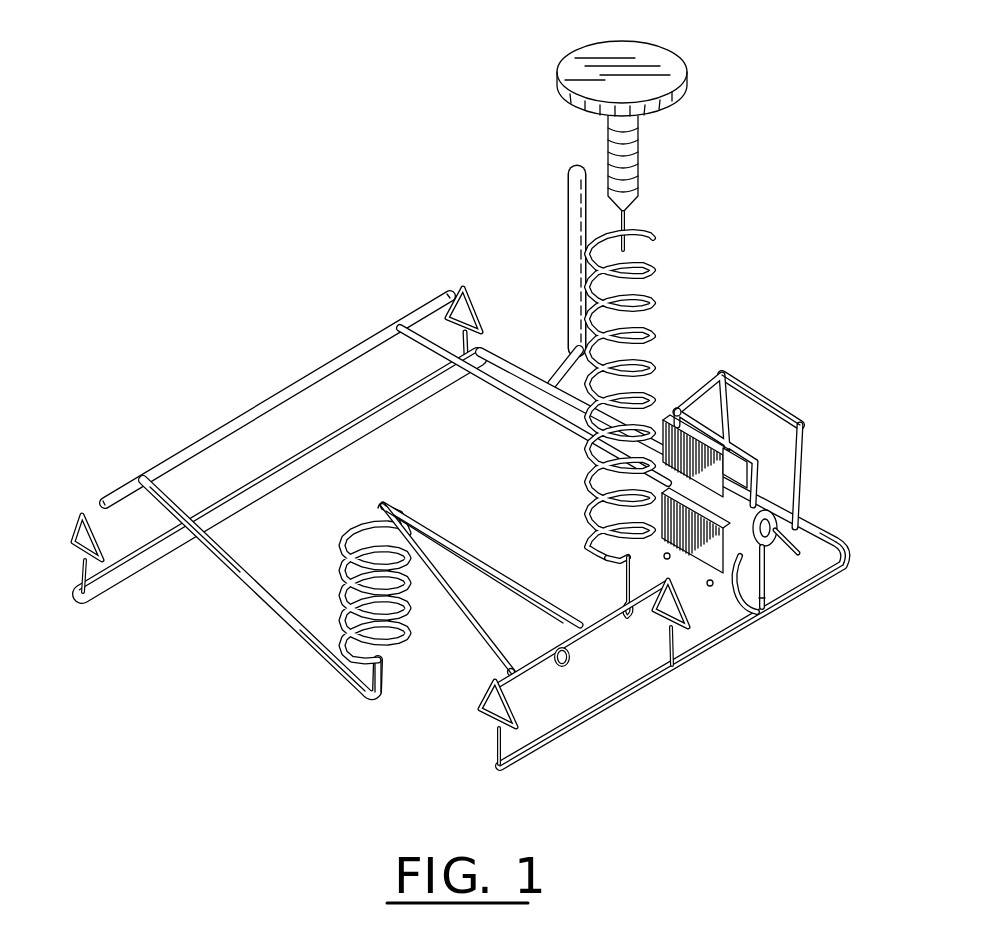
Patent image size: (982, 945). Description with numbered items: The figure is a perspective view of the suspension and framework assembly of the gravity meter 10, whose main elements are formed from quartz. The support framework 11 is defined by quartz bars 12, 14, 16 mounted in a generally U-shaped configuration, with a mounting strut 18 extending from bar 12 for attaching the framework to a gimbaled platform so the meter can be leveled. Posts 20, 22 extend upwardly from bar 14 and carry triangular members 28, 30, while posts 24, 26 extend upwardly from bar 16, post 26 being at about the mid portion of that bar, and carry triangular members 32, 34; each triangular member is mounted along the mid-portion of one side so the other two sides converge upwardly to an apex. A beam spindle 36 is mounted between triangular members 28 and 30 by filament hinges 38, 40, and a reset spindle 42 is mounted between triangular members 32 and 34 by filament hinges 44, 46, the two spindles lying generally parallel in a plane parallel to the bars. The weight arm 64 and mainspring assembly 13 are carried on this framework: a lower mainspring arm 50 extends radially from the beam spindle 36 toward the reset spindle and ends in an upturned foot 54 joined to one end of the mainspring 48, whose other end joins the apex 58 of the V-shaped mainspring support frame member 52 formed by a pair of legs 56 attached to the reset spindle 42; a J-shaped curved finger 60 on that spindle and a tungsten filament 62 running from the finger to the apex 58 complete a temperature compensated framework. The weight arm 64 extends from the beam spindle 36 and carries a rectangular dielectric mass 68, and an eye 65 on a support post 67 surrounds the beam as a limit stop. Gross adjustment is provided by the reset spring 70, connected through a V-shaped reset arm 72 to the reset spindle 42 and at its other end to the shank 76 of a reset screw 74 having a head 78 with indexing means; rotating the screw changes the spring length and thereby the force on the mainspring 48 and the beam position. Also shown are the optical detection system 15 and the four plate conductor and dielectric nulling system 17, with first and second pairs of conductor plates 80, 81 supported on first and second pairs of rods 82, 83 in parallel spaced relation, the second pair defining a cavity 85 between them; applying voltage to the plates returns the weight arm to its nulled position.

The gravity meter 10 is at (351, 341).
The support framework 11 is at (252, 502).
The quartz bar 12 is at (838, 538).
The mainspring assembly 13 is at (351, 677).
The quartz bar 14 is at (398, 414).
The optical detection system 15 is at (798, 505).
The quartz bar 16 is at (545, 745).
The four plate conductor and dielectric nulling system 17 is at (781, 390).
The mounting strut 18 is at (568, 212).
The post 20 is at (82, 572).
The post 22 is at (483, 350).
The post 24 is at (497, 748).
The post 26 is at (680, 650).
The triangular member 28 is at (76, 527).
The triangular member 30 is at (480, 300).
The triangular member 32 is at (485, 705).
The triangular member 34 is at (670, 632).
The beam spindle 36 is at (250, 418).
The filament hinge 38 is at (97, 503).
The filament hinge 40 is at (445, 297).
The reset spindle 42 is at (600, 600).
The filament hinge 44 is at (497, 680).
The filament hinge 46 is at (757, 546).
The mainspring 48 is at (343, 563).
The lower mainspring arm 50 is at (278, 612).
The mainspring support frame member 52 is at (414, 520).
The upturned foot 54 is at (390, 692).
The legs 56 is at (497, 573).
The apex 58 is at (368, 510).
The J-shaped curved finger 60 is at (567, 670).
The tungsten filament 62 is at (460, 545).
The weight arm 64 is at (566, 428).
The eye 65 is at (768, 600).
The support post 67 is at (768, 586).
The dielectric mass 68 is at (598, 470).
The reset spring 70 is at (651, 275).
The V-shaped reset arm 72 is at (627, 630).
The reset screw 74 is at (640, 150).
The shank 76 is at (638, 200).
The head 78 is at (670, 50).
The first pair of conductor plates 80 is at (760, 613).
The second pair of conductor plates 81 is at (748, 466).
The first pair of rods 82 is at (852, 552).
The second pair of rods 83 is at (724, 372).
The second cavity 85 is at (676, 411).